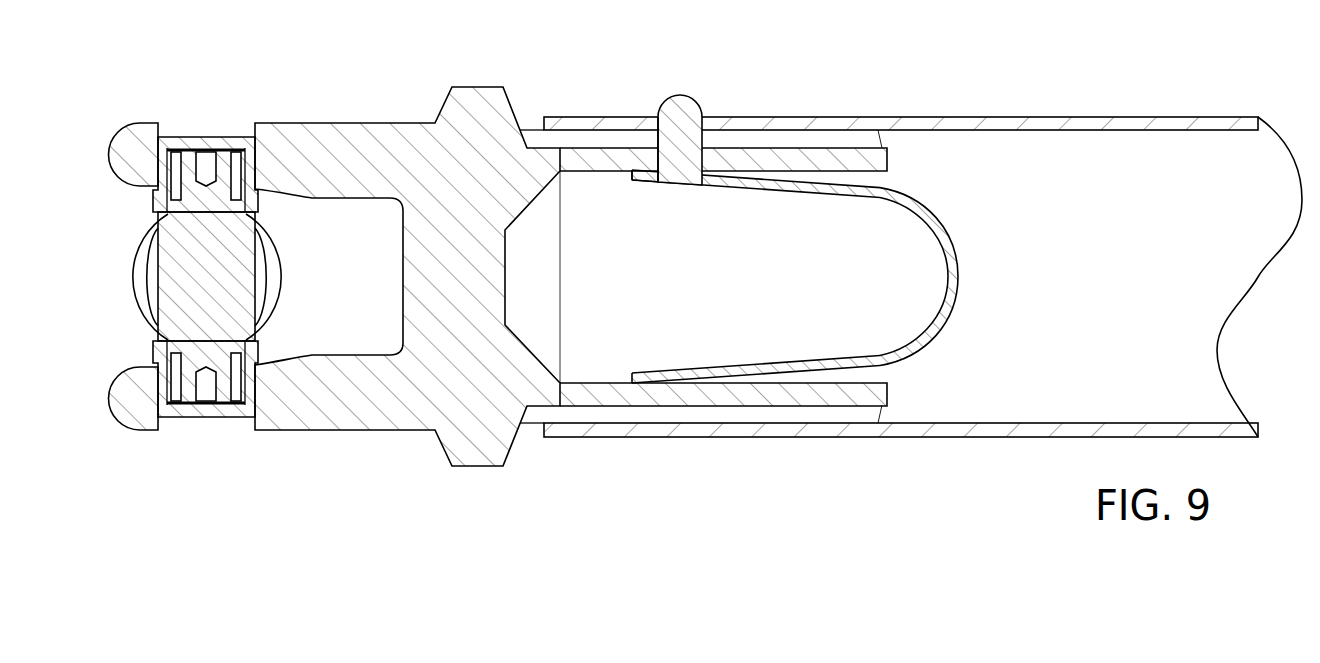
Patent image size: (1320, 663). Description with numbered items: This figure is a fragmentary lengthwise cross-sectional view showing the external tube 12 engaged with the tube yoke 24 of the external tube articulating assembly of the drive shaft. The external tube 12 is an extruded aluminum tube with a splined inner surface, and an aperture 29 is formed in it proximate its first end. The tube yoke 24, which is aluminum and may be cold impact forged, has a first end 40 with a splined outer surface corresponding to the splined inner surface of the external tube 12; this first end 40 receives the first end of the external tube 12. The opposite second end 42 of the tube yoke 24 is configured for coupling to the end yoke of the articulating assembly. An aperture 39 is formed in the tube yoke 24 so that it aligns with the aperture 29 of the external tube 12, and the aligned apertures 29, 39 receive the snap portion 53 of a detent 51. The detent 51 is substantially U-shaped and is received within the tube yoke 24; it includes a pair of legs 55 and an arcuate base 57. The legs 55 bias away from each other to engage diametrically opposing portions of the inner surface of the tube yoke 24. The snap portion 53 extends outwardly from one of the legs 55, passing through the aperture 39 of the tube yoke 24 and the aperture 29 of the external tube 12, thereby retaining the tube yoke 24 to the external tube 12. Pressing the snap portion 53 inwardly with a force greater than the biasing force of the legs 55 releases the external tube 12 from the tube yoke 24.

The external tube 12 is at (1007, 115).
The tube yoke 24 is at (783, 145).
The aperture 29 is at (660, 127).
The aperture 39 is at (660, 160).
The first end 40 is at (887, 162).
The second end 42 is at (118, 424).
The detent 51 is at (936, 350).
The snap portion 53 is at (676, 97).
The legs 55 is at (772, 185).
The arcuate base 57 is at (948, 286).